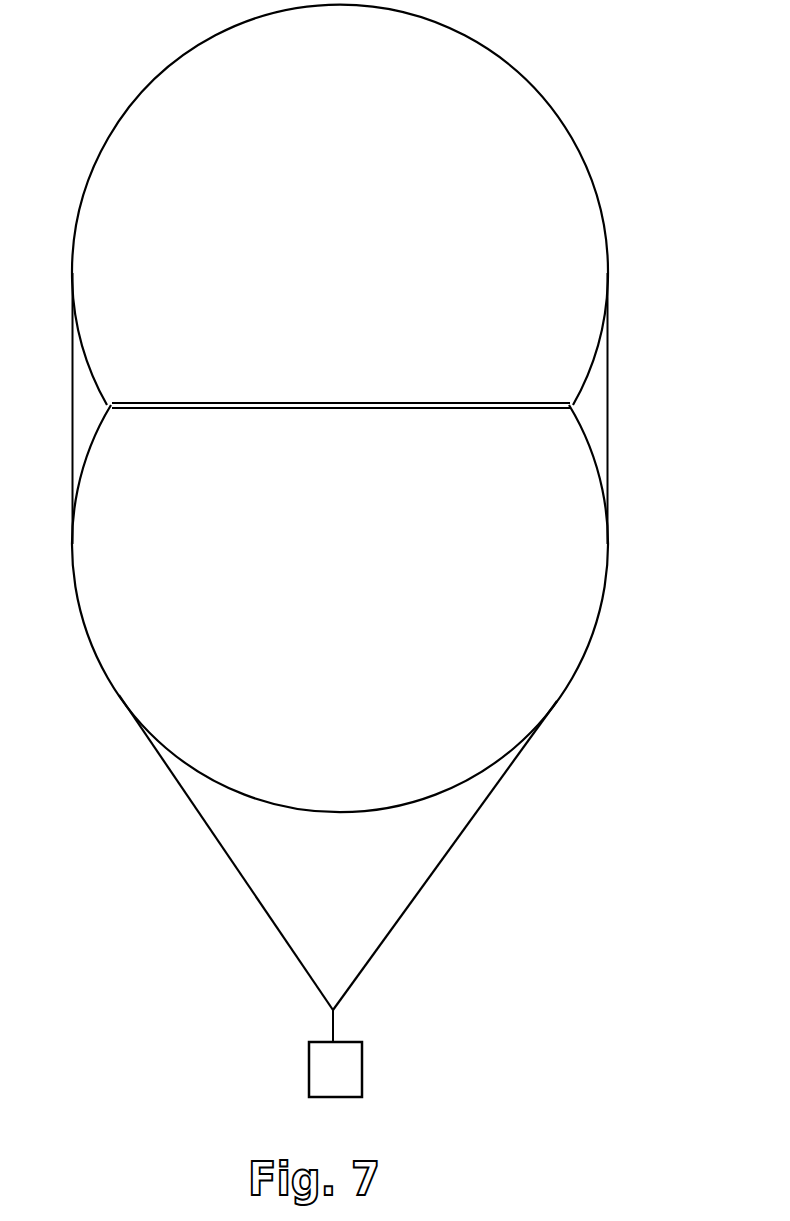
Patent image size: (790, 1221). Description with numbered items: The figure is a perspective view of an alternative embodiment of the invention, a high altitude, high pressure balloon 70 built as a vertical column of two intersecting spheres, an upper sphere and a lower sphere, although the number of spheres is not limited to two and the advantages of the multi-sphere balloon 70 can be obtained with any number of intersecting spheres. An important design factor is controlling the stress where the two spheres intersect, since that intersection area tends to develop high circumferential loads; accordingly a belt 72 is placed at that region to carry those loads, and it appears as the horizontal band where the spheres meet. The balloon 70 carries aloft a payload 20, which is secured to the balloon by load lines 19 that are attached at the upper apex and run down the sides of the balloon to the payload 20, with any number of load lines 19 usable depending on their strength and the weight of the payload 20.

The belt 72 is at (462, 409).
The high altitude, high pressure balloon 70 is at (590, 688).
The load lines 19 is at (272, 924).
The payload 20 is at (309, 1073).